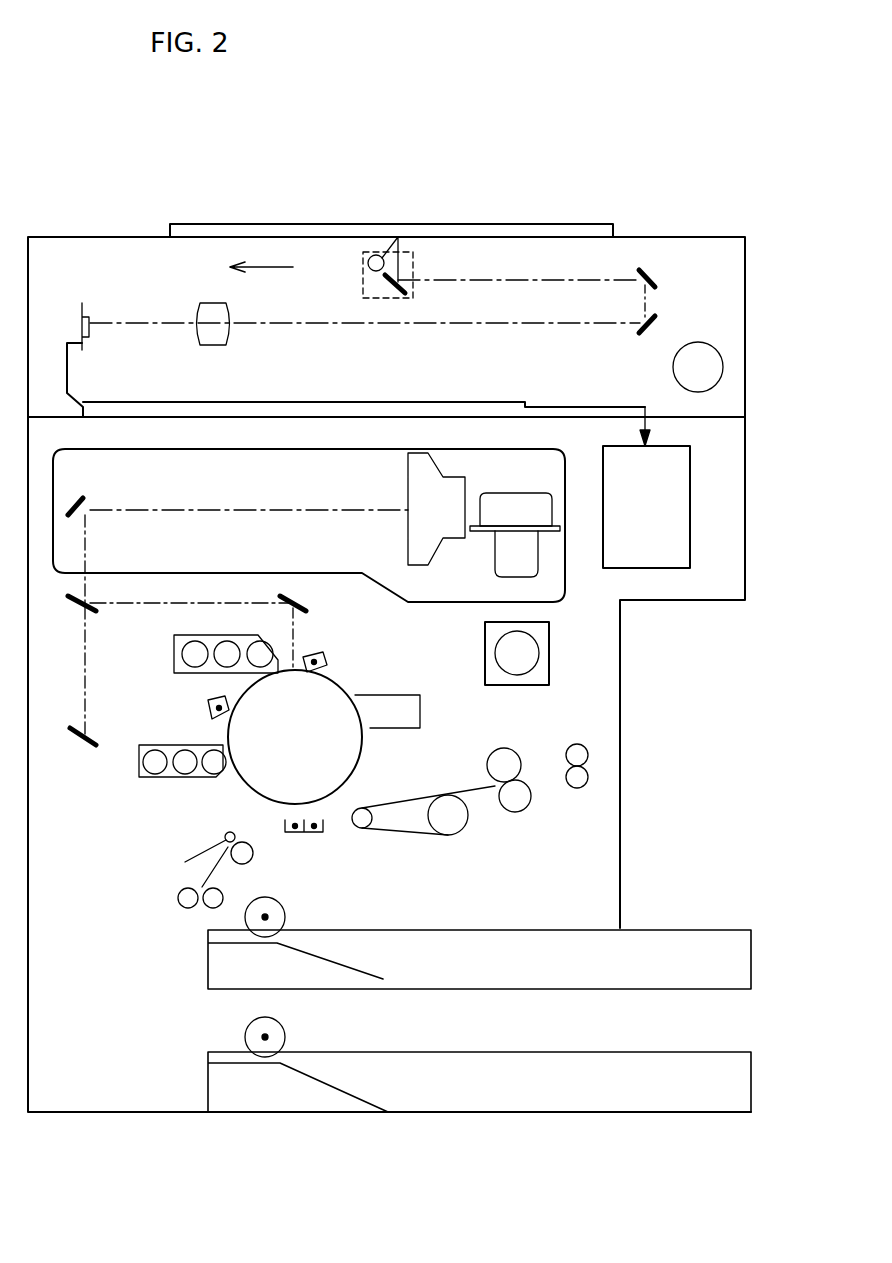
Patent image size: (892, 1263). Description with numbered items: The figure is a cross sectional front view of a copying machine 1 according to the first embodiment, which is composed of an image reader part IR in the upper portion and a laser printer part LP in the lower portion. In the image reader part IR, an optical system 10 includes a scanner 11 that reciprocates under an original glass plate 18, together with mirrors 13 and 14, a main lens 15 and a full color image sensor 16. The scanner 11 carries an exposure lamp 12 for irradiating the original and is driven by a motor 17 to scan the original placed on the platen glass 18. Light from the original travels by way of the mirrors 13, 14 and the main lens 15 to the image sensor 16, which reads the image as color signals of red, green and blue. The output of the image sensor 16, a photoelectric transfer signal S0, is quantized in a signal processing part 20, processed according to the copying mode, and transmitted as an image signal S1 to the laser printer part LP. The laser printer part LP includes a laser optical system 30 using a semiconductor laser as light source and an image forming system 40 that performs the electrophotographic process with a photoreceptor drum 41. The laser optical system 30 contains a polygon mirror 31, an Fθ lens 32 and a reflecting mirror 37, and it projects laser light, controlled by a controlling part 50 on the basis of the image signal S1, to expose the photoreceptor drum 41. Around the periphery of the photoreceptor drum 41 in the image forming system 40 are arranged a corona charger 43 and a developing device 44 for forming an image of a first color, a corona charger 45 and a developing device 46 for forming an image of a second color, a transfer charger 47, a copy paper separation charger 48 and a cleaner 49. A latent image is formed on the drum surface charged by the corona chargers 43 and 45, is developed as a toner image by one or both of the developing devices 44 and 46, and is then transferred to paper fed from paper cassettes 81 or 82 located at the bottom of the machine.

The copying machine 1 is at (60, 195).
The optical system 10 is at (296, 316).
The scanner 11 is at (413, 258).
The exposure lamp 12 is at (368, 262).
The mirror 13 is at (652, 272).
The mirror 14 is at (645, 335).
The main lens 15 is at (228, 342).
The full color image sensor 16 is at (88, 315).
The motor 17 is at (705, 342).
The original glass plate 18 is at (490, 224).
The signal processing part 20 is at (356, 402).
The laser optical system 30 is at (284, 493).
The polygon mirror 31 is at (517, 493).
The Fθ lens 32 is at (408, 546).
The reflecting mirror 37 is at (85, 497).
The image forming system 40 is at (446, 668).
The photoreceptor drum 41 is at (310, 773).
The corona charger 43 is at (322, 652).
The developing device 44 is at (174, 658).
The corona charger 45 is at (208, 712).
The developing device 46 is at (139, 778).
The transfer charger 47 is at (280, 823).
The copy paper separation charger 48 is at (325, 830).
The cleaner 49 is at (398, 728).
The controlling part 50 is at (660, 518).
The paper cassette 81 is at (432, 928).
The paper cassette 82 is at (390, 1052).
The image reader part IR is at (642, 237).
The laser printer part LP is at (620, 655).
The photoelectric transfer signal S0 is at (70, 378).
The image signal S1 is at (562, 406).